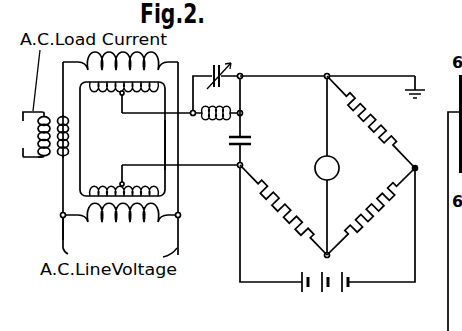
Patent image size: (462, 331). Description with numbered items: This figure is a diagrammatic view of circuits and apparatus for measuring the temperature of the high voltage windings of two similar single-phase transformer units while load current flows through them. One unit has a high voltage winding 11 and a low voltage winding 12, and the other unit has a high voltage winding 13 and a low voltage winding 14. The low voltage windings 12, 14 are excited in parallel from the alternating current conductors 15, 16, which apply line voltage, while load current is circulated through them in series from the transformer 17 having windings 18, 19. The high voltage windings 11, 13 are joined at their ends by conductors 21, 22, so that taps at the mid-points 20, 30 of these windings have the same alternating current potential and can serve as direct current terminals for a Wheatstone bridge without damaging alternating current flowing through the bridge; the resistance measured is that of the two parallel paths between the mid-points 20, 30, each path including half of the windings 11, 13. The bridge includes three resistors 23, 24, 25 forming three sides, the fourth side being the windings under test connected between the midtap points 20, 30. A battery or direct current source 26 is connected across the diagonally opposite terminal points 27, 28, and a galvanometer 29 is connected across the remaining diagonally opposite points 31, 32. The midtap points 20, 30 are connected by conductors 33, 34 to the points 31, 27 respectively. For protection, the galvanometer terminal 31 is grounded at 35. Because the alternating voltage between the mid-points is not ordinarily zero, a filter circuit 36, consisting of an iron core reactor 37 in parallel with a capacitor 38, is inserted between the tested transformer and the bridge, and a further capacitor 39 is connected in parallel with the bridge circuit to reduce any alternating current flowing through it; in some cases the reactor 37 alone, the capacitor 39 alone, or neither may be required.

The high voltage winding 11 is at (107, 91).
The low voltage winding 12 is at (156, 61).
The high voltage winding 13 is at (112, 183).
The low voltage winding 14 is at (128, 221).
The alternating current conductor 15 is at (63, 239).
The alternating current conductor 16 is at (179, 240).
The transformer 17 is at (34, 134).
The winding 18 is at (43, 158).
The winding 19 is at (61, 166).
The mid-point 20 is at (124, 93).
The conductor 21 is at (81, 145).
The conductor 22 is at (164, 145).
The resistor 23 is at (276, 223).
The resistor 24 is at (389, 223).
The resistor 25 is at (365, 118).
The battery or direct current source 26 is at (327, 293).
The terminal point of the bridge 27 is at (238, 168).
The terminal point of the bridge 28 is at (417, 172).
The galvanometer 29 is at (339, 168).
The mid-point 30 is at (125, 181).
The point of the bridge 31 is at (328, 74).
The point of the bridge 32 is at (332, 256).
The conductor 33 is at (155, 114).
The conductor 34 is at (217, 164).
The ground 35 is at (421, 76).
The filter circuit 36 is at (231, 52).
The iron core reactor 37 is at (221, 118).
The capacitor 38 is at (221, 86).
The capacitor 39 is at (254, 138).